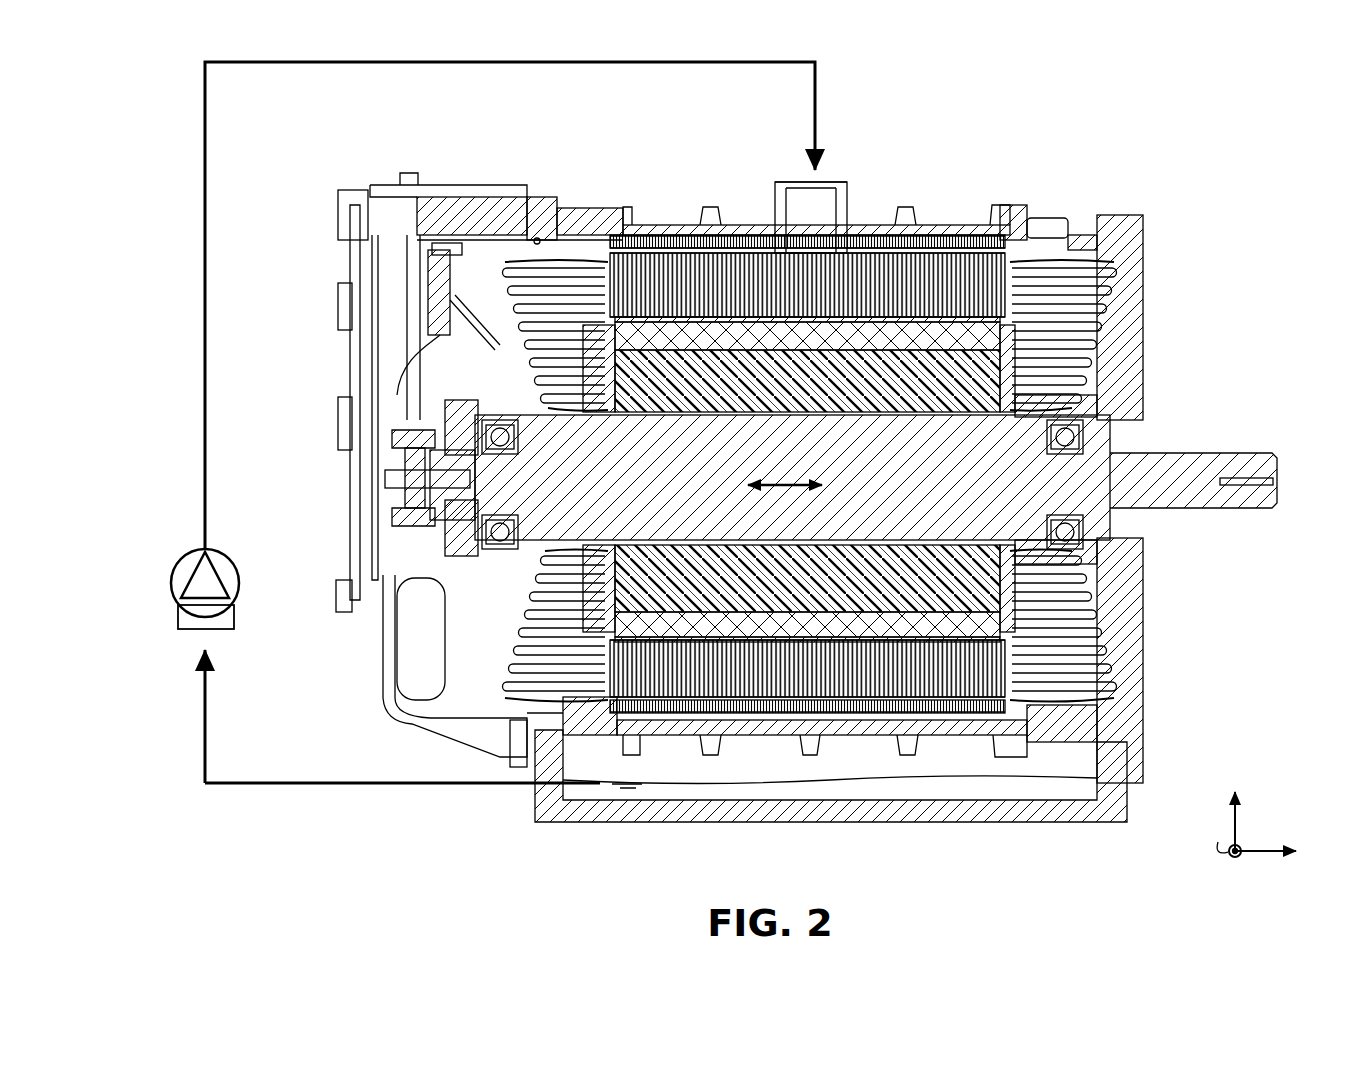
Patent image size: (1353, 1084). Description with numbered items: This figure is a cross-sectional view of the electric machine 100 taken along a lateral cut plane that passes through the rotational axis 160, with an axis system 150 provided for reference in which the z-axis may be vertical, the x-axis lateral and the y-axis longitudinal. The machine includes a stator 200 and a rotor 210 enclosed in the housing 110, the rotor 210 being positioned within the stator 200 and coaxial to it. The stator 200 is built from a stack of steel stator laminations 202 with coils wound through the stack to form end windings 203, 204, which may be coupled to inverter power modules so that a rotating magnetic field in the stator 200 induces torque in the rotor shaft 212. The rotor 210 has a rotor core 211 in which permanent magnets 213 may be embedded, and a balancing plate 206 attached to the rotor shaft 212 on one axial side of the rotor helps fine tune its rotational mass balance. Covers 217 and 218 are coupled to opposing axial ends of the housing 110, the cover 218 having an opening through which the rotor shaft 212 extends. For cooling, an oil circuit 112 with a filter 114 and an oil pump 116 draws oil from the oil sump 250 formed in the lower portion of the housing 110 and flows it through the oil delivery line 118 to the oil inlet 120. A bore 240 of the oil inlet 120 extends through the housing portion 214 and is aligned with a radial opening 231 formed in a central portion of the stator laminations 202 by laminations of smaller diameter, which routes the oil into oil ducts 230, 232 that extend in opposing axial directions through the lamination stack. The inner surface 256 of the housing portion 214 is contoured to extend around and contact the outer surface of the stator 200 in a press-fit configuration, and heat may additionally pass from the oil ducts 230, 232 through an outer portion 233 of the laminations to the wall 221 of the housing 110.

The electric machine 100 is at (1264, 131).
The housing 110 is at (535, 122).
The oil circuit 112 is at (120, 196).
The filter 114 is at (180, 629).
The oil pump 116 is at (172, 581).
The oil delivery line 118 is at (203, 385).
The oil inlet 120 is at (792, 178).
The axis system 150 is at (1294, 817).
The rotational axis 160 is at (785, 459).
The stator 200 is at (928, 301).
The stator laminations 202 is at (877, 267).
The end winding 203 is at (512, 382).
The end winding 204 is at (1120, 351).
The balancing plate 206 is at (590, 615).
The rotor 210 is at (748, 399).
The rotor core 211 is at (928, 391).
The rotor shaft 212 is at (1208, 453).
The permanent magnets 213 is at (862, 338).
The housing portion 214 is at (552, 217).
The cover 217 is at (385, 700).
The cover 218 is at (1145, 676).
The wall 221 is at (935, 233).
The oil duct 230 is at (743, 249).
The radial opening 231 is at (805, 243).
The oil duct 232 is at (930, 246).
The outer portion 233 is at (703, 253).
The bore 240 is at (832, 183).
The oil sump 250 is at (629, 830).
The inner surface 256 is at (668, 237).